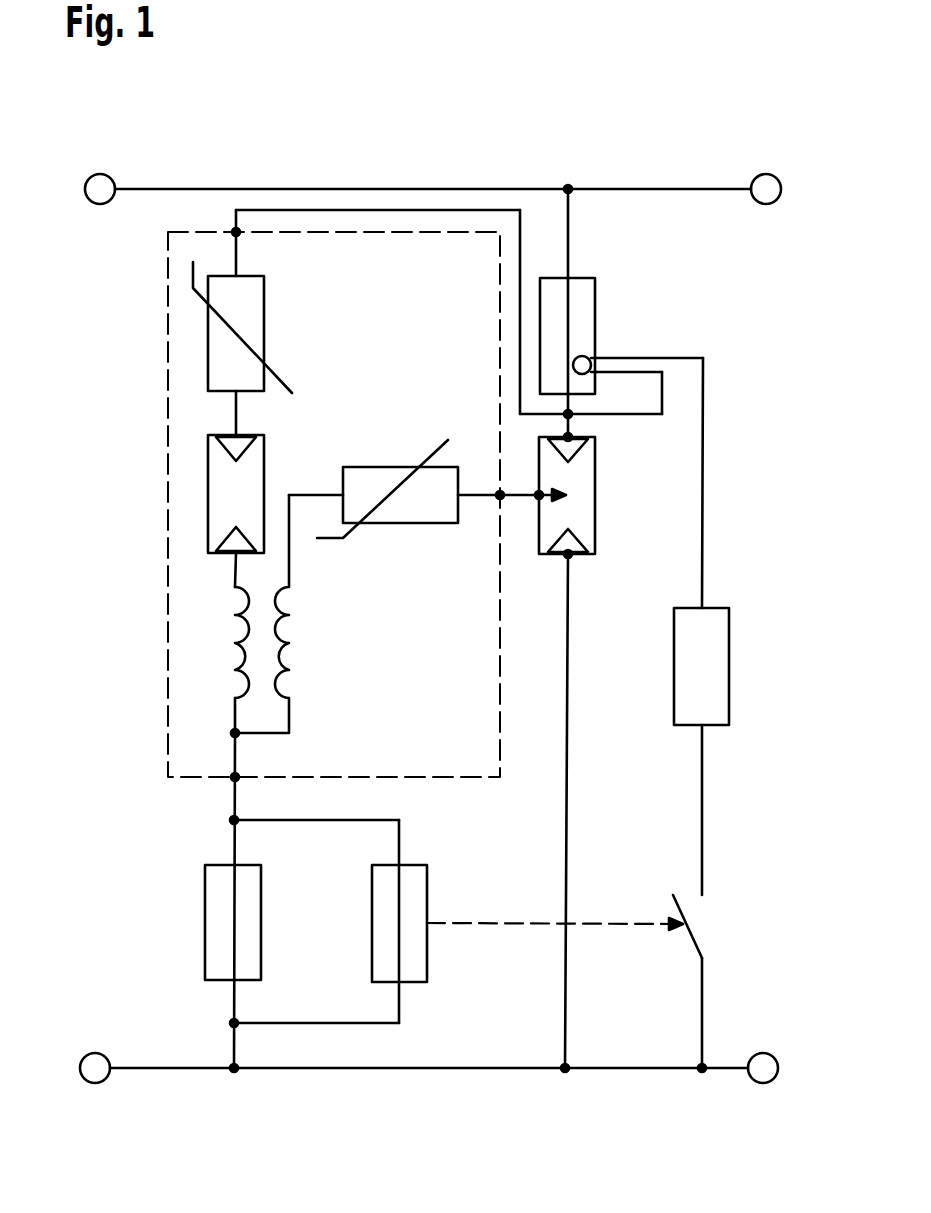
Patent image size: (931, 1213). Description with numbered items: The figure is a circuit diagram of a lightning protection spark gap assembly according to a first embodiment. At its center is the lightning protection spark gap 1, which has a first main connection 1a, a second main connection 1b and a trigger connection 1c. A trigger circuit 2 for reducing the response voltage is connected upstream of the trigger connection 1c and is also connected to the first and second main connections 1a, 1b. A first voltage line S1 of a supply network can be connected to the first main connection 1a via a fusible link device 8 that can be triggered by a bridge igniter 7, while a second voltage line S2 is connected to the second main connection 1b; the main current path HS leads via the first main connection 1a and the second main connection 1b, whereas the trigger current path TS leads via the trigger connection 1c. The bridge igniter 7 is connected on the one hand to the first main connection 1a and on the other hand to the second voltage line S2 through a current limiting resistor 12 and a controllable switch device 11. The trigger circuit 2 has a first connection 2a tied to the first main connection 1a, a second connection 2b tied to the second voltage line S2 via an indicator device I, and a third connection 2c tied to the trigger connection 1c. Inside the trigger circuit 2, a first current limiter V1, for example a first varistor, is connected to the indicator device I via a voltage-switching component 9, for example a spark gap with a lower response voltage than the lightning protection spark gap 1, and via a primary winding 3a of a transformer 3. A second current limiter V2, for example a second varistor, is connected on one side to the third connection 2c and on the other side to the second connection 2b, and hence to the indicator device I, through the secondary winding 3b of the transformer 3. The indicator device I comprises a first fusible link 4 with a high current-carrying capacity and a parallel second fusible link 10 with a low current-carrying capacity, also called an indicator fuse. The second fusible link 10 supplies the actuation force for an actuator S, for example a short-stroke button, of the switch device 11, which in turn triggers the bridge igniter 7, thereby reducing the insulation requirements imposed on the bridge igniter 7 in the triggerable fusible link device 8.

The lightning protection spark gap 1 is at (596, 495).
The first main connection 1a is at (569, 436).
The second main connection 1b is at (569, 556).
The trigger connection 1c is at (538, 497).
The trigger circuit 2 is at (167, 410).
The first connection 2a is at (238, 234).
The second connection 2b is at (237, 776).
The third connection 2c is at (499, 497).
The transformer 3 is at (254, 626).
The primary winding 3a is at (244, 607).
The secondary winding 3b is at (281, 607).
The first fusible link 4 is at (262, 898).
The bridge igniter 7 is at (588, 357).
The fusible link device 8 is at (596, 305).
The voltage-switching component 9 is at (207, 498).
The second fusible link 10 is at (428, 900).
The controllable switch device 11 is at (684, 915).
The current limiting resistor 12 is at (729, 668).
The first current limiter V1 is at (264, 333).
The second current limiter V2 is at (395, 467).
The first voltage line S1 is at (328, 188).
The second voltage line S2 is at (505, 1067).
The main current path HS is at (567, 742).
The trigger current path TS is at (329, 495).
The actuator S is at (652, 920).
The indicator device I is at (187, 953).